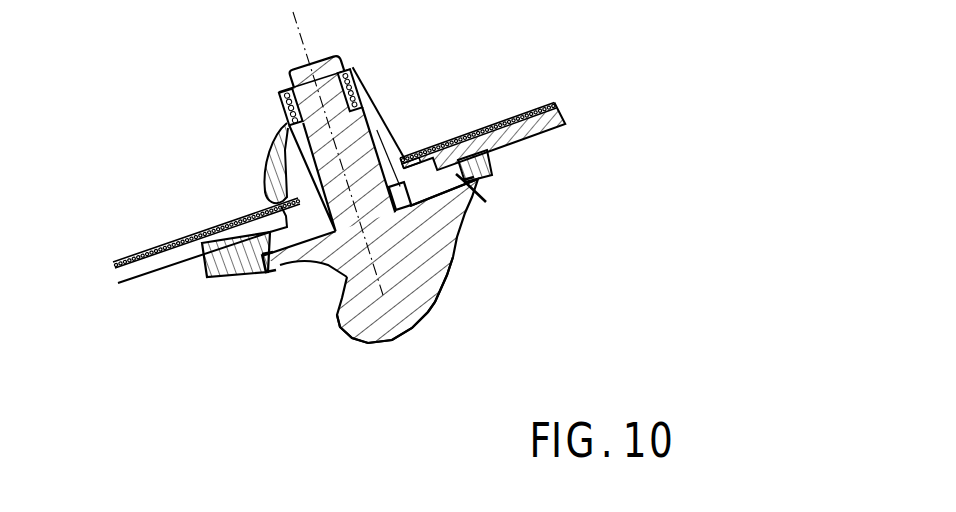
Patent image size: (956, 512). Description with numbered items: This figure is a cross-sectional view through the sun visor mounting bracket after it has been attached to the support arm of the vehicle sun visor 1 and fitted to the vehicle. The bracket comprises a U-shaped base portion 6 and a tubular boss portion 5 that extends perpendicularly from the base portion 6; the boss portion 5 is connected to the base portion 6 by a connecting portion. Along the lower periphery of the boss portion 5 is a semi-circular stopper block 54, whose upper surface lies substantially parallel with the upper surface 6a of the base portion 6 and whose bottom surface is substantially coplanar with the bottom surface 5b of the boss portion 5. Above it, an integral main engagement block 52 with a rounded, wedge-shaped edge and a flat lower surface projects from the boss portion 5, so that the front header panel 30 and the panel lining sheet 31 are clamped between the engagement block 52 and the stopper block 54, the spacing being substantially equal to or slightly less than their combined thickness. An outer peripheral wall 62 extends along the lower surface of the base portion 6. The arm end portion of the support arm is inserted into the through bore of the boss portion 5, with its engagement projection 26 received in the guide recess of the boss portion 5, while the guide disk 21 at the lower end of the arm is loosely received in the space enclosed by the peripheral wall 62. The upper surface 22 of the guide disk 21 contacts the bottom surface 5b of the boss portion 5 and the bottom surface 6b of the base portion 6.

The vehicle sun visor 1 is at (422, 306).
The boss portion 5 is at (340, 213).
The bottom surface of the boss portion 5b is at (315, 255).
The base portion 6 is at (359, 284).
The upper surface of the base portion 6a is at (207, 242).
The bottom surface of the base portion 6b is at (275, 272).
The guide disk 21 is at (293, 260).
The upper surface of the guide disk 22 is at (468, 213).
The engagement projection 26 is at (437, 247).
The front header panel 30 is at (535, 108).
The panel lining sheet 31 is at (538, 128).
The main engagement block 52 is at (267, 177).
The stopper block 54 is at (405, 158).
The outer peripheral wall 62 is at (255, 270).